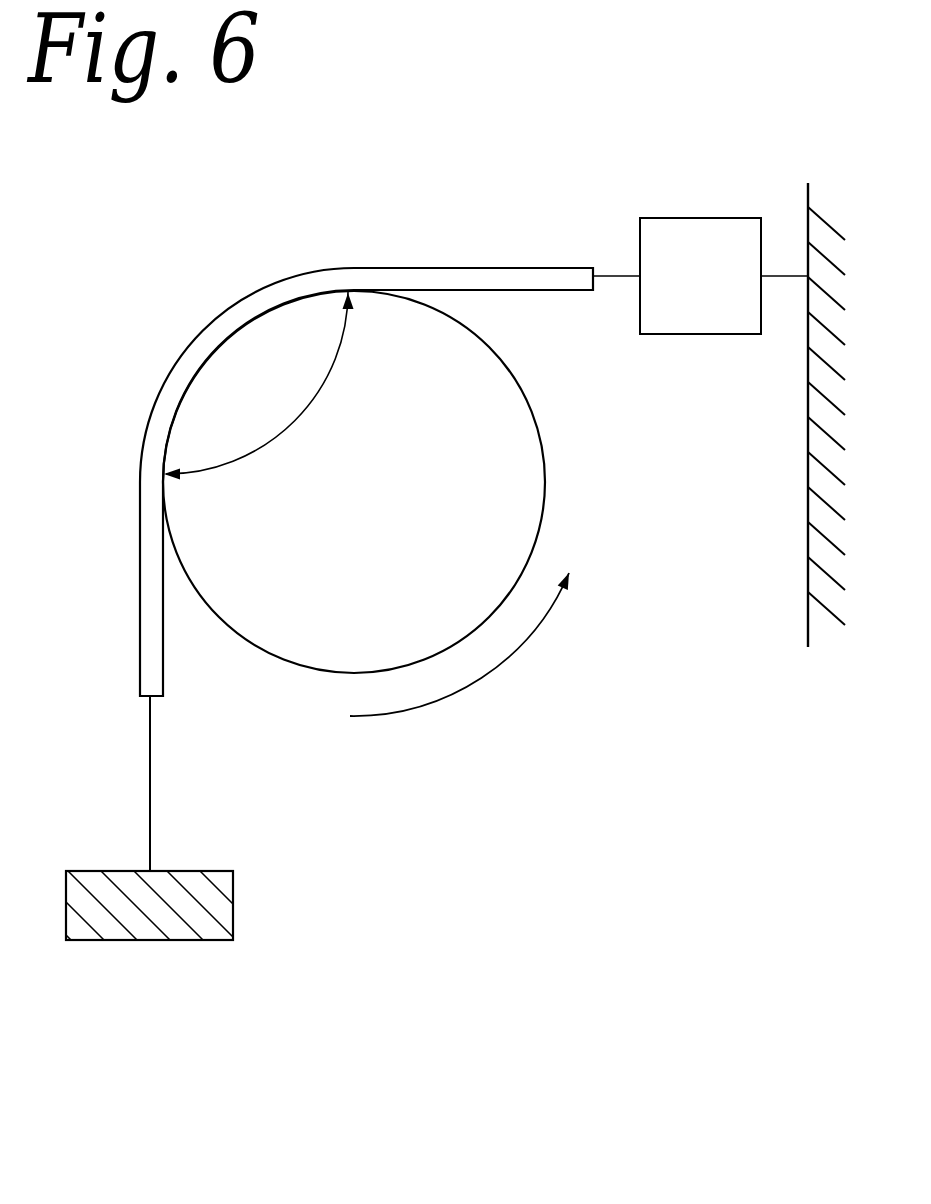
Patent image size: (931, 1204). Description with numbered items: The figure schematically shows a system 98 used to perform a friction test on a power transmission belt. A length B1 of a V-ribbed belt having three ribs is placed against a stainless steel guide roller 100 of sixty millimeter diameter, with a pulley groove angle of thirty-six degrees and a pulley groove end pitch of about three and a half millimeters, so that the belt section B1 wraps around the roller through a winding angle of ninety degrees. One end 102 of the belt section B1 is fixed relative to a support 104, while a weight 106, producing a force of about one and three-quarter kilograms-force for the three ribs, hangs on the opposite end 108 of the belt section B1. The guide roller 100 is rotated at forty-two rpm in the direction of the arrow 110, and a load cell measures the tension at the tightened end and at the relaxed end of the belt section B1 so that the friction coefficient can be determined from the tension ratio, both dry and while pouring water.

The friction test system 98 is at (772, 146).
The guide roller 100 is at (440, 567).
The one end of the belt section 102 is at (593, 290).
The support 104 is at (808, 540).
The weight 106 is at (192, 940).
The opposite end of the belt section 108 is at (150, 700).
The arrow 110 is at (402, 712).
The belt section B1 is at (177, 354).